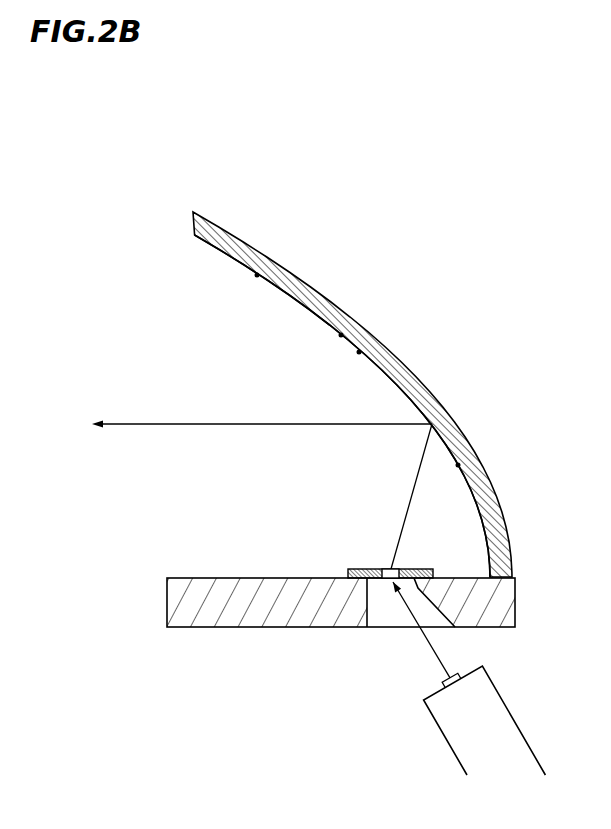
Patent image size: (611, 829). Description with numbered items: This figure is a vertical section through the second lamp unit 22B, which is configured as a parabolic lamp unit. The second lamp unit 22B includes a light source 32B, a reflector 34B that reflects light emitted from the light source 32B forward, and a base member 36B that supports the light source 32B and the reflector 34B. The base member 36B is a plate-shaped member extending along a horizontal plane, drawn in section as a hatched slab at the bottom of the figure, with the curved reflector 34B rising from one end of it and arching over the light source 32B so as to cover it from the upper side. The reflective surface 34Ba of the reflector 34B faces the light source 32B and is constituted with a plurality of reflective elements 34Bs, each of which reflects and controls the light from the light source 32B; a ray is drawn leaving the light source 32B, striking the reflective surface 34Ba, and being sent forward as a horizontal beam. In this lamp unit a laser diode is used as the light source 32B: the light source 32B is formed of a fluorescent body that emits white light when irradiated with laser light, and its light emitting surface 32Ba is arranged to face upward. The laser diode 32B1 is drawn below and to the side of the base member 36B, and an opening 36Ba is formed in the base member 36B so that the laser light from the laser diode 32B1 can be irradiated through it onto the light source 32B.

The second lamp unit 22B is at (442, 210).
The reflector 34B is at (417, 380).
The reflective surface 34Ba is at (255, 276).
The reflective elements 34Bs is at (377, 367).
The light source 32B is at (382, 567).
The light emitting surface 32Ba is at (385, 567).
The base member 36B is at (225, 627).
The opening 36Ba is at (383, 612).
The laser diode 32B1 is at (437, 733).